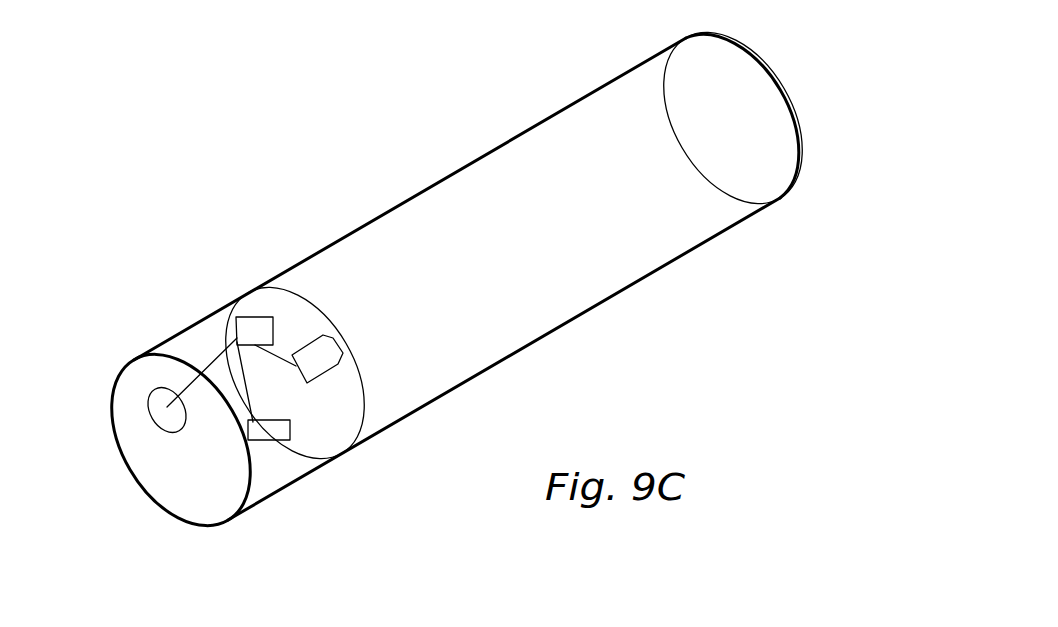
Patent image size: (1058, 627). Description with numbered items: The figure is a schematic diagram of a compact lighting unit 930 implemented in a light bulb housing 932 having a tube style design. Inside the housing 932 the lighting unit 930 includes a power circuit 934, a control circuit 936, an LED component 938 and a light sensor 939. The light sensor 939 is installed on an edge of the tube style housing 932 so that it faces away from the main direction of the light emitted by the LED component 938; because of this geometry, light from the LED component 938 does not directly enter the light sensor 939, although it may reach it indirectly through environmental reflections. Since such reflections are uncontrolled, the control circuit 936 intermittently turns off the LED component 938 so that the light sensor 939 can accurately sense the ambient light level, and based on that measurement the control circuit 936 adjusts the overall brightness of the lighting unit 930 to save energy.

The compact lighting unit 930 is at (366, 157).
The light bulb housing 932 is at (547, 333).
The power circuit 934 is at (157, 415).
The control circuit 936 is at (253, 328).
The LED component 938 is at (317, 366).
The light sensor 939 is at (265, 433).